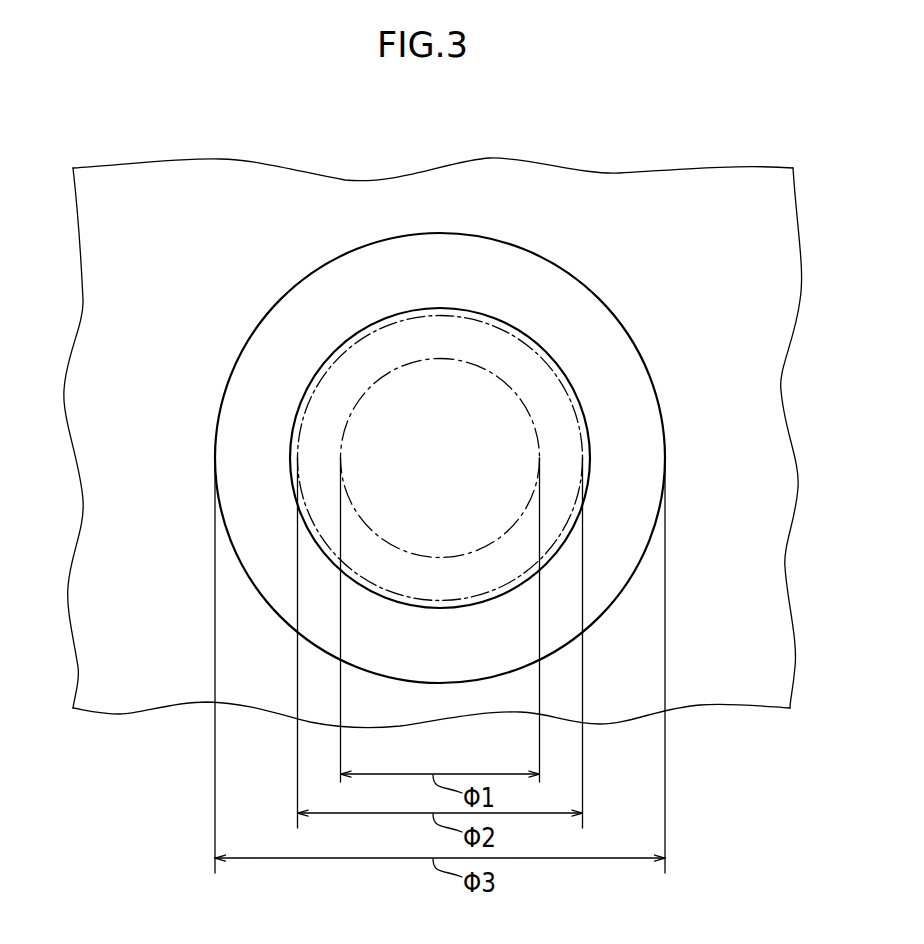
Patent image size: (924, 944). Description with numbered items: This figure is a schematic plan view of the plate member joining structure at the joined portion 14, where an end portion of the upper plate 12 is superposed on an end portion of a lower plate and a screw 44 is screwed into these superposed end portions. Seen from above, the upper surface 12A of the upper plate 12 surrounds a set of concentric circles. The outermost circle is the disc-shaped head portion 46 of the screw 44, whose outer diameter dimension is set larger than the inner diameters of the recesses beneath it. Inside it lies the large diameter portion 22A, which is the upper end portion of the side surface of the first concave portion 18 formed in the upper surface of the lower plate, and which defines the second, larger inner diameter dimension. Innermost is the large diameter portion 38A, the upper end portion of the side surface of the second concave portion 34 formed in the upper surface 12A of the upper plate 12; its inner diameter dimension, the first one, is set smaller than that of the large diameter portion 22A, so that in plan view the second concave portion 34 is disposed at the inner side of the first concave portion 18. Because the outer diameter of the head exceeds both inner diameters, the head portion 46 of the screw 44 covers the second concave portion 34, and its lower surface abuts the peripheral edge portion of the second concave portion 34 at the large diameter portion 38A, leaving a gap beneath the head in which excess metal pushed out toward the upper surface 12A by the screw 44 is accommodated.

The upper plate 12 is at (640, 152).
The upper surface 12A is at (740, 280).
The joined portion 14 is at (641, 312).
The large diameter portion 22A is at (415, 355).
The first concave portion 18 is at (375, 325).
The large diameter portion 38A is at (440, 325).
The second concave portion 34 is at (480, 367).
The screw 44 is at (657, 393).
The head portion 46 is at (663, 447).